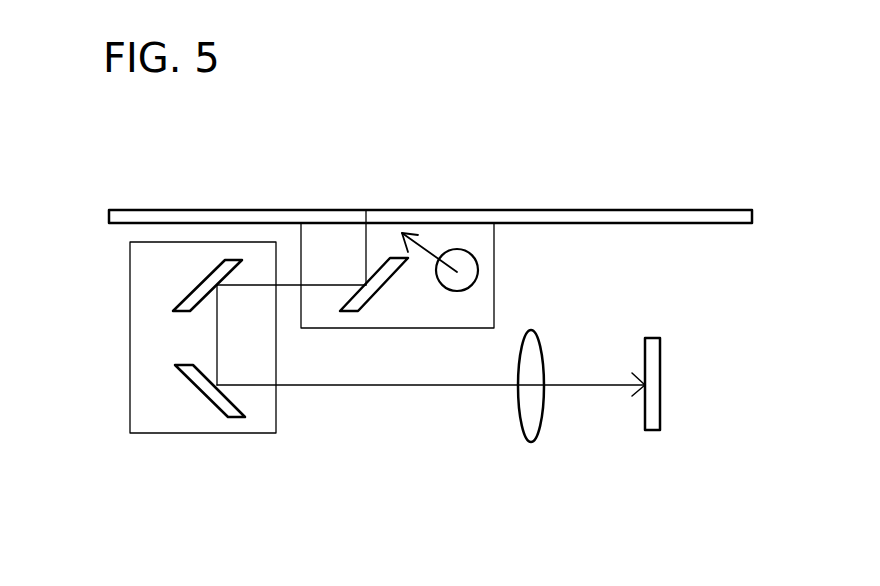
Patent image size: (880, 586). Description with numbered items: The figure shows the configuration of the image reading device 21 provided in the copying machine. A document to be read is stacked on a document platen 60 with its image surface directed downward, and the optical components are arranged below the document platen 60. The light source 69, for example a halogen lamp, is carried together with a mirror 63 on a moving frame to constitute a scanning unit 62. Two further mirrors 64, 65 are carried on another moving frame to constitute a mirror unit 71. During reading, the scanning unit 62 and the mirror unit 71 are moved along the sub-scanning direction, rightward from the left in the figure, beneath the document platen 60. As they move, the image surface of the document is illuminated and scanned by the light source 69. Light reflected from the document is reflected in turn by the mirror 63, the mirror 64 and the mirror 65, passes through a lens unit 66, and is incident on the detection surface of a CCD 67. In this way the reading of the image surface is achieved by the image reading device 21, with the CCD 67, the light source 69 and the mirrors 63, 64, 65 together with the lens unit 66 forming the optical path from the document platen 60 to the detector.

The image reading device 21 is at (328, 198).
The document platen 60 is at (573, 209).
The scanning unit 62 is at (494, 269).
The mirror 63 is at (380, 292).
The mirror 64 is at (195, 283).
The mirror 65 is at (205, 395).
The lens unit 66 is at (543, 360).
The CCD 67 is at (660, 362).
The light source 69 is at (460, 292).
The mirror unit 71 is at (130, 339).